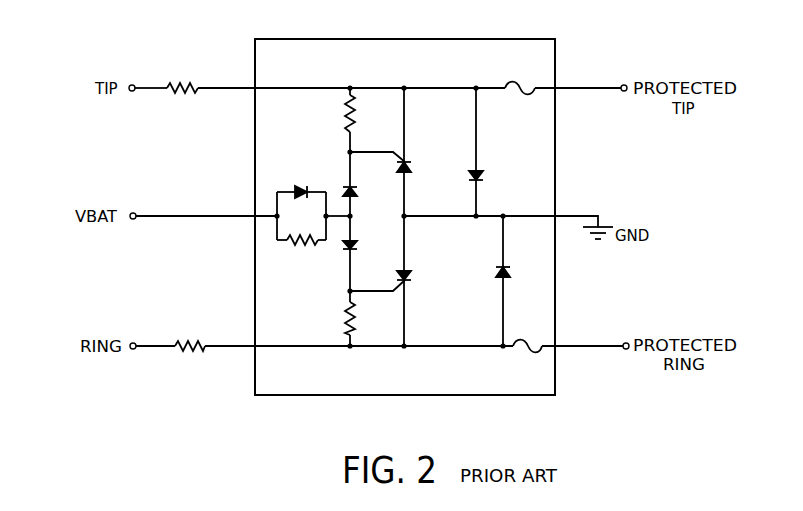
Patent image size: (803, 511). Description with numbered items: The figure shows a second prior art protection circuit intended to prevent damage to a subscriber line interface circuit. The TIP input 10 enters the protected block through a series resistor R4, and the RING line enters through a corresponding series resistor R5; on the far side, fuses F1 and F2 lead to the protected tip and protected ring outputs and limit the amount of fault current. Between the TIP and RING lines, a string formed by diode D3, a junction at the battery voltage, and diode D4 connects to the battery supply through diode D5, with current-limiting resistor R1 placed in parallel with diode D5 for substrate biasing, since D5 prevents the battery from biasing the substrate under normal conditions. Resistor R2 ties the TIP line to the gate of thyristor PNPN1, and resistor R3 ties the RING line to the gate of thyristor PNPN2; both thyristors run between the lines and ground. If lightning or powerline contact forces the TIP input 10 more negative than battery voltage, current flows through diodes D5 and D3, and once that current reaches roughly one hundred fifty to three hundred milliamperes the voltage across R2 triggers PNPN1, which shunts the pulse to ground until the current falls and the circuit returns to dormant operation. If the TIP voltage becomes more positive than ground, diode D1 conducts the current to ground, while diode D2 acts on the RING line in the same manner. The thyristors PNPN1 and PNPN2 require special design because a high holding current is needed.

The TIP input 10 is at (374, 217).
The resistor R1 is at (301, 251).
The resistor R2 is at (336, 113).
The resistor R3 is at (339, 318).
The resistor R4 is at (182, 78).
The resistor R5 is at (190, 336).
The diode D1 is at (490, 177).
The diode D2 is at (516, 274).
The diode D3 is at (363, 194).
The diode D4 is at (364, 248).
The diode D5 is at (301, 180).
The fuse F1 is at (520, 99).
The fuse F2 is at (527, 357).
The thyristor PNPN1 is at (404, 175).
The thyristor PNPN2 is at (408, 270).